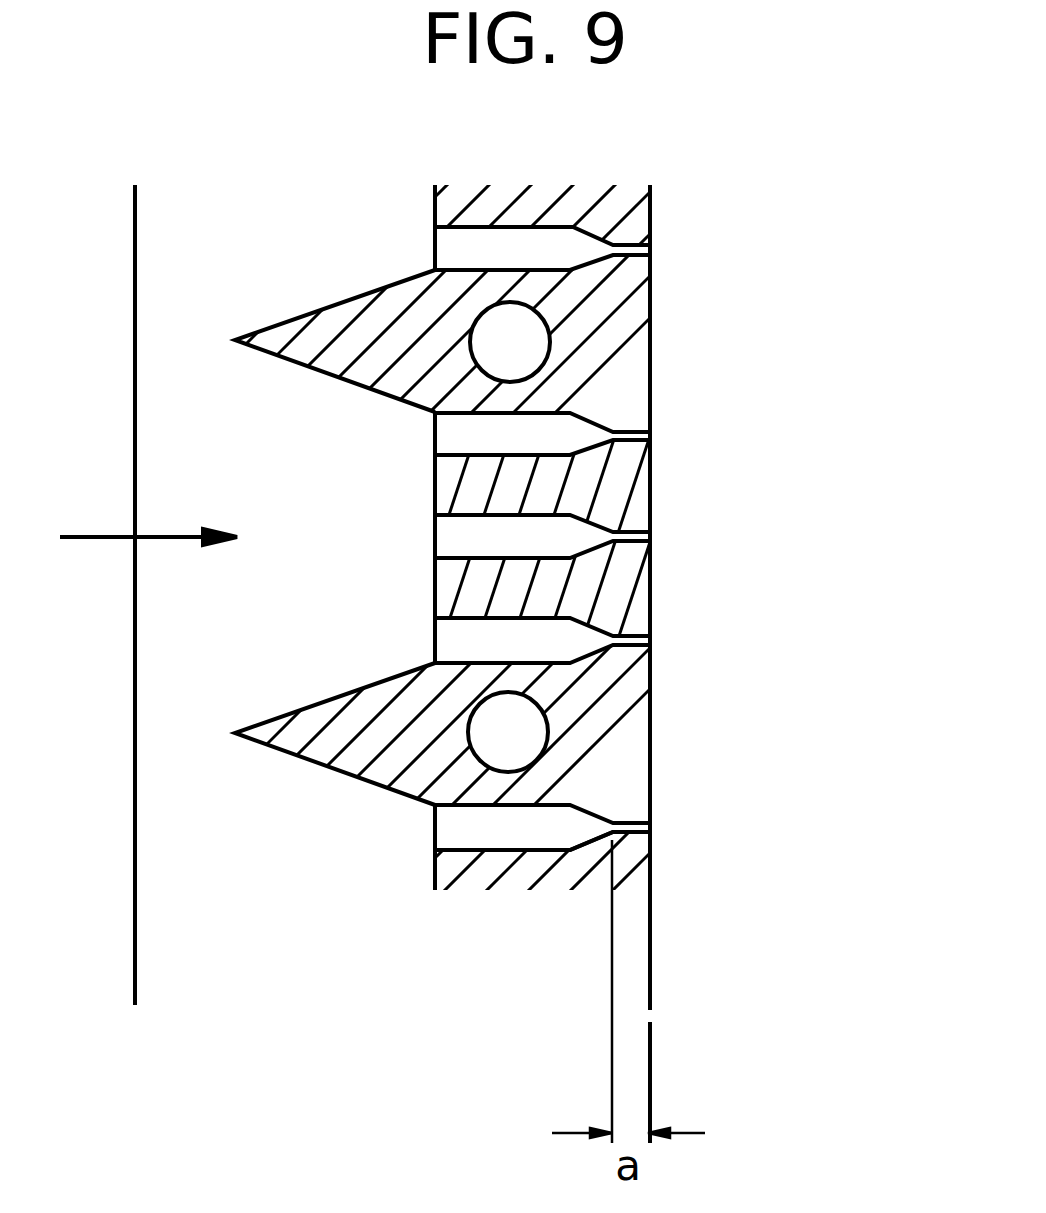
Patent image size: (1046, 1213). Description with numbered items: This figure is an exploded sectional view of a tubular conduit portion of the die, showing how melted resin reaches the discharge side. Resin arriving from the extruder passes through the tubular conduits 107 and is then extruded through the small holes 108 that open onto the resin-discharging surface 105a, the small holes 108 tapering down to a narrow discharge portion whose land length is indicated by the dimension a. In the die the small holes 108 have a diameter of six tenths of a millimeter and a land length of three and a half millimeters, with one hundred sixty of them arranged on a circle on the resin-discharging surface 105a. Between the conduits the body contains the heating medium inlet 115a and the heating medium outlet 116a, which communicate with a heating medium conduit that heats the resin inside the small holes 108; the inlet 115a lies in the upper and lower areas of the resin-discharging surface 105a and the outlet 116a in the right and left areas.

The resin-discharging surface 105a is at (650, 783).
The tubular conduit 107 is at (573, 838).
The small hole 108 is at (650, 432).
The heating medium inlet 115a is at (520, 342).
The heating medium outlet 116a is at (520, 732).